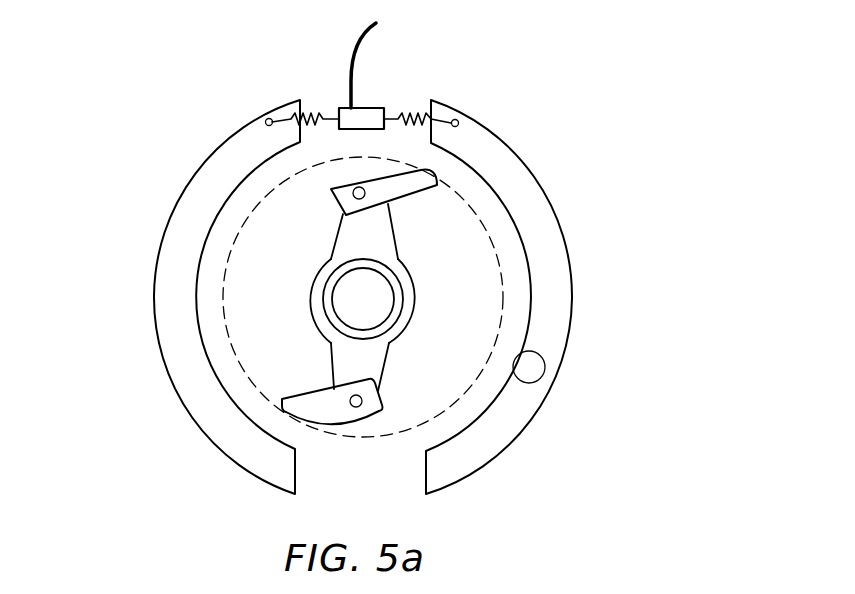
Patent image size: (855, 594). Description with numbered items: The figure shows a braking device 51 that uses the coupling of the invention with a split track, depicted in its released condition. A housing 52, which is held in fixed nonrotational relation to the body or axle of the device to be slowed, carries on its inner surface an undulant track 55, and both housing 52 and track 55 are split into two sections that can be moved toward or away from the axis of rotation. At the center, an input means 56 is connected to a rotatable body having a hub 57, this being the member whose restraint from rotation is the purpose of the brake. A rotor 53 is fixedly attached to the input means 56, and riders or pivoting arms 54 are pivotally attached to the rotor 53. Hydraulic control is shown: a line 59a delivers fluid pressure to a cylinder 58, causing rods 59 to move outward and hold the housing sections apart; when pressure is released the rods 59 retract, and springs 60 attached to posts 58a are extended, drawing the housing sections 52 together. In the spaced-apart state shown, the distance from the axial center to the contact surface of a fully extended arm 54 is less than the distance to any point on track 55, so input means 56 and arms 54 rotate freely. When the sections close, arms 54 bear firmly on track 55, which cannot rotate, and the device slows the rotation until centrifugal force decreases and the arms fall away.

The brake assembly 51 is at (615, 198).
The housing 52 is at (175, 261).
The rotor 53 is at (413, 288).
The rider 54 is at (375, 178).
The track 55 is at (545, 388).
The input means 56 is at (395, 305).
The hub 57 is at (377, 318).
The cylinder 58 is at (364, 110).
The posts 58a is at (462, 115).
The rods 59 is at (325, 117).
The line 59a is at (378, 25).
The springs 60 is at (415, 115).